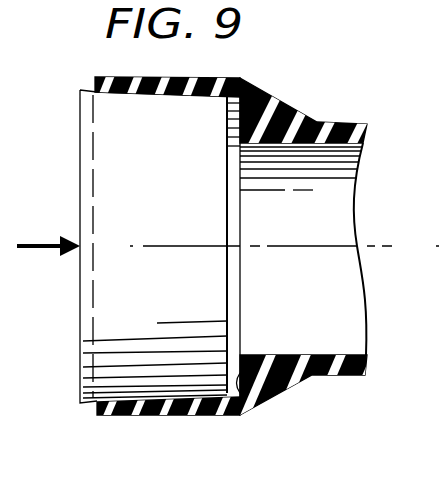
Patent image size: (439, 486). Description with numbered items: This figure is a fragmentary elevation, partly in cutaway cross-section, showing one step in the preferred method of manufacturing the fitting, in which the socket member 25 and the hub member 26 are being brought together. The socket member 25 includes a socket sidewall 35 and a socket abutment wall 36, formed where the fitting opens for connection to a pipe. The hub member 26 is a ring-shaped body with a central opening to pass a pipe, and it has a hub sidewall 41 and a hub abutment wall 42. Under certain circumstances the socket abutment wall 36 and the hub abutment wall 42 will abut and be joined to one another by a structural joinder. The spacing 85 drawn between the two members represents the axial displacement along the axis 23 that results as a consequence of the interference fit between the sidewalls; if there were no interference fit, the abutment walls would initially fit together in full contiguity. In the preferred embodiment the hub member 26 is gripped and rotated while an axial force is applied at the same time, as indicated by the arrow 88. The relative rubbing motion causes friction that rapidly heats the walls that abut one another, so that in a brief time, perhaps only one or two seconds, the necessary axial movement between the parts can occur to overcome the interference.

The axis 23 is at (364, 246).
The socket member 25 is at (325, 109).
The hub member 26 is at (163, 77).
The socket sidewall 35 is at (125, 398).
The socket abutment wall 36 is at (242, 390).
The hub sidewall 41 is at (127, 415).
The hub abutment wall 42 is at (233, 332).
The spacing 85 is at (243, 124).
The arrow 88 is at (50, 217).